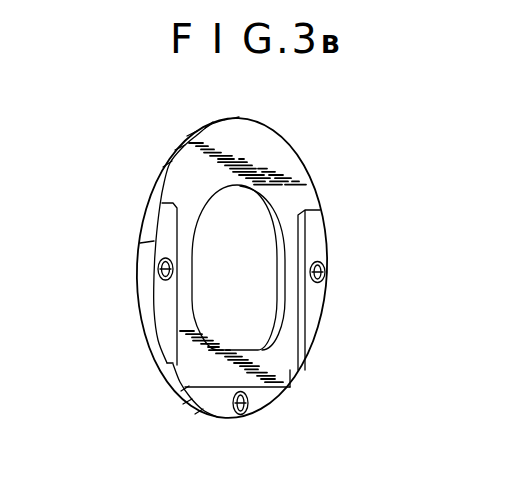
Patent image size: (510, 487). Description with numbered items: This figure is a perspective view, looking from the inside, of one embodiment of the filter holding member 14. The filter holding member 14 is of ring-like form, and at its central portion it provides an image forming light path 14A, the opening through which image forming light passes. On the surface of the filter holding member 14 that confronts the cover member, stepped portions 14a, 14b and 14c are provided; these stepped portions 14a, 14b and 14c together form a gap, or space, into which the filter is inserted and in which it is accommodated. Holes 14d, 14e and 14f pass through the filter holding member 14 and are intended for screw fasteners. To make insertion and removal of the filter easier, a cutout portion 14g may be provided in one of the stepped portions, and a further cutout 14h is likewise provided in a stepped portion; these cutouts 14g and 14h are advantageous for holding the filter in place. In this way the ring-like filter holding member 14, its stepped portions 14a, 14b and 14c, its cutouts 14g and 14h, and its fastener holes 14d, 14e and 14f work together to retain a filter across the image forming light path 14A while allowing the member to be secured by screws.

The filter holding member 14 is at (338, 351).
The image forming light path 14A is at (250, 220).
The stepped portion 14a is at (318, 233).
The stepped portion 14b is at (170, 223).
The stepped portion 14c is at (222, 407).
The hole 14d is at (322, 271).
The hole 14e is at (160, 270).
The hole 14f is at (247, 406).
The cutout portion 14g is at (173, 377).
The cutout 14h is at (288, 369).